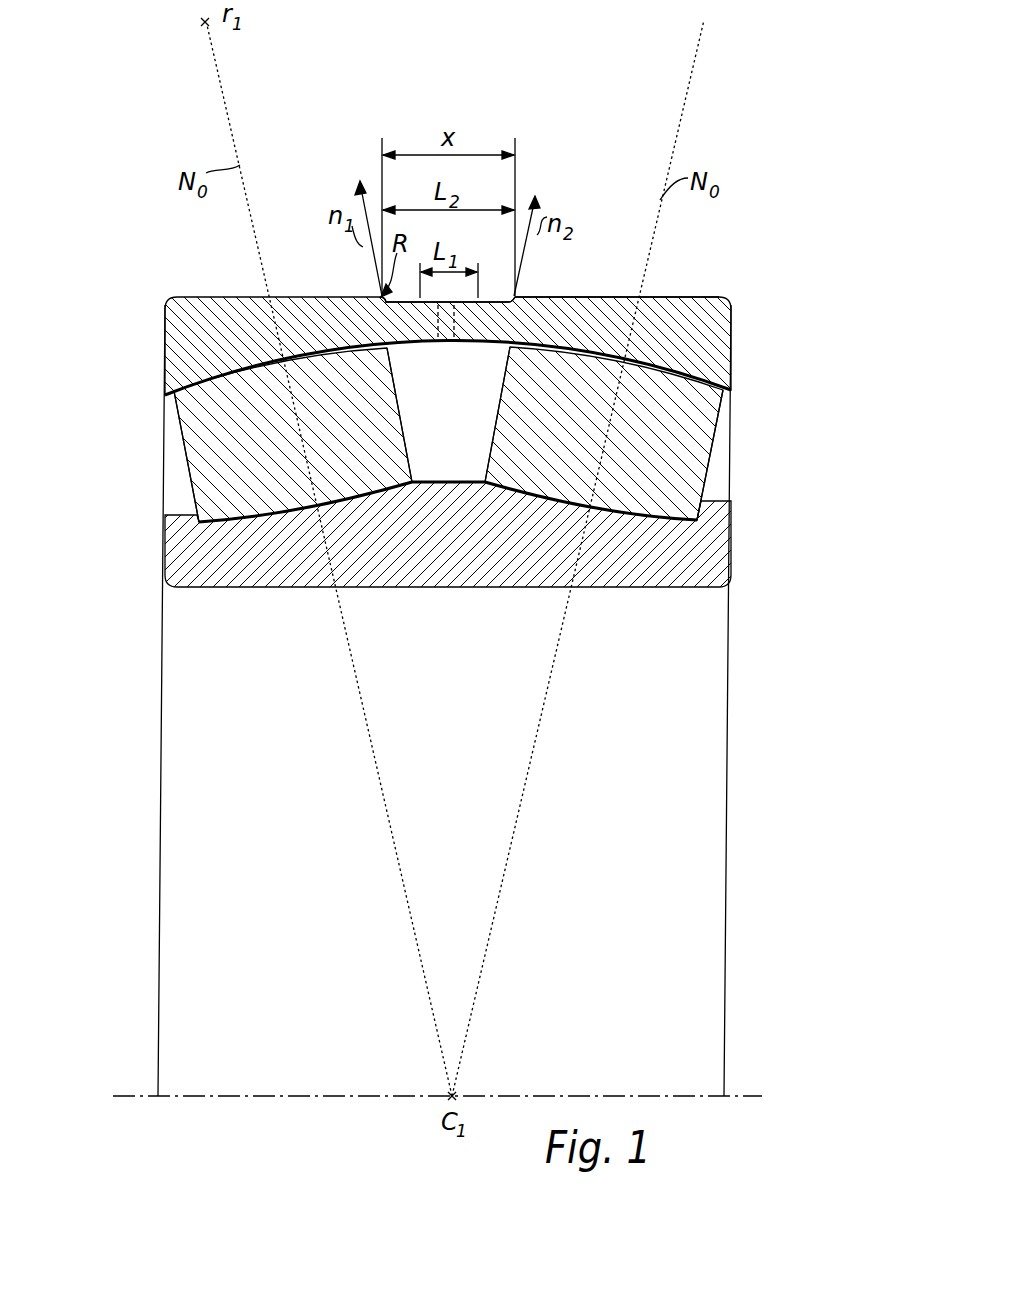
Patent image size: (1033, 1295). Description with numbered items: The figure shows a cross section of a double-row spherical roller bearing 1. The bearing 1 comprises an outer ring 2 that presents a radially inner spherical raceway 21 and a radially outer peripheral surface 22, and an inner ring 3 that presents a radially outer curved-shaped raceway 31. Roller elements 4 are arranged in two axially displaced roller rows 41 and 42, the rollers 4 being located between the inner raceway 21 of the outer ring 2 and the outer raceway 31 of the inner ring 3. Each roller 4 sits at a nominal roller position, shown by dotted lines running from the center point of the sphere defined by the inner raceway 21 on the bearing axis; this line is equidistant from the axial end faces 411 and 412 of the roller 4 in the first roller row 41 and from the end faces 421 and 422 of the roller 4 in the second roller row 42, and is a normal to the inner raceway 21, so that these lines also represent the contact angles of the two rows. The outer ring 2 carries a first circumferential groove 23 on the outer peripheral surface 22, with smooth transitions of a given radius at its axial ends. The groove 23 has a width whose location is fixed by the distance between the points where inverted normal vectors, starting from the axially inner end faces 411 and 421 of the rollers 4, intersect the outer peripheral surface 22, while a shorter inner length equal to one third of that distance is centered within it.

The double-row spherical roller bearing 1 is at (754, 256).
The outer ring 2 is at (177, 298).
The radially inner spherical raceway 21 is at (168, 397).
The radially outer peripheral surface 22 is at (598, 297).
The first circumferential groove 23 is at (492, 312).
The inner ring 3 is at (162, 552).
The radially outer curved-shaped raceway 31 is at (221, 523).
The roller elements 4 is at (177, 418).
The first roller row 41 is at (200, 520).
The axially inner end face of roller in first roller row 411 is at (390, 352).
The axially outer end face of roller in first roller row 412 is at (180, 456).
The second roller row 42 is at (723, 412).
The axially inner end face of roller in second roller row 421 is at (510, 353).
The axially outer end face of roller in second roller row 422 is at (710, 475).